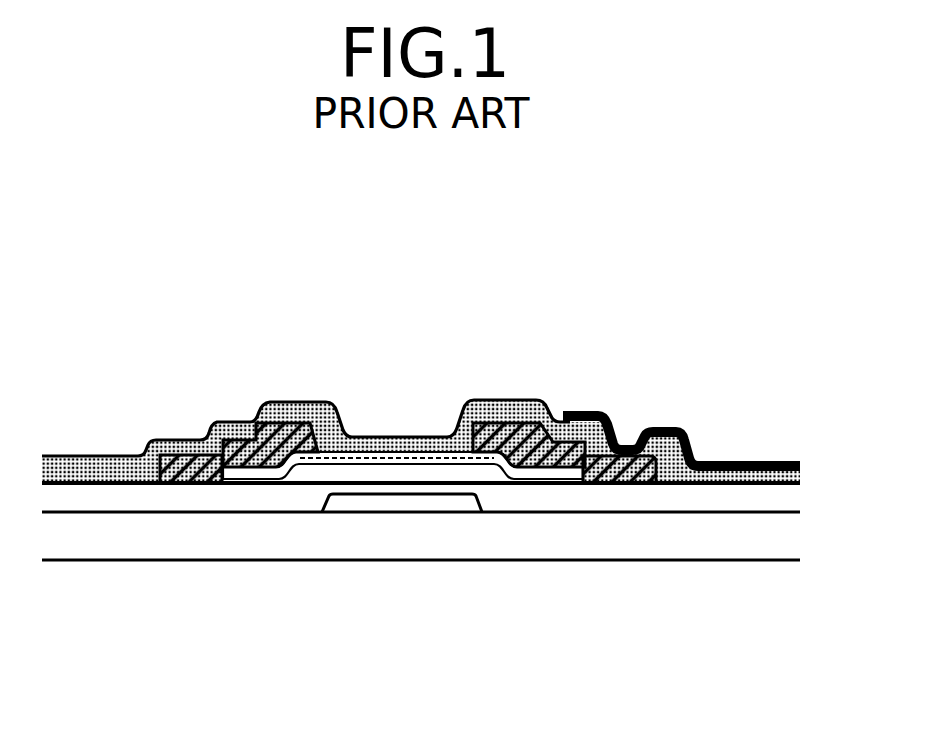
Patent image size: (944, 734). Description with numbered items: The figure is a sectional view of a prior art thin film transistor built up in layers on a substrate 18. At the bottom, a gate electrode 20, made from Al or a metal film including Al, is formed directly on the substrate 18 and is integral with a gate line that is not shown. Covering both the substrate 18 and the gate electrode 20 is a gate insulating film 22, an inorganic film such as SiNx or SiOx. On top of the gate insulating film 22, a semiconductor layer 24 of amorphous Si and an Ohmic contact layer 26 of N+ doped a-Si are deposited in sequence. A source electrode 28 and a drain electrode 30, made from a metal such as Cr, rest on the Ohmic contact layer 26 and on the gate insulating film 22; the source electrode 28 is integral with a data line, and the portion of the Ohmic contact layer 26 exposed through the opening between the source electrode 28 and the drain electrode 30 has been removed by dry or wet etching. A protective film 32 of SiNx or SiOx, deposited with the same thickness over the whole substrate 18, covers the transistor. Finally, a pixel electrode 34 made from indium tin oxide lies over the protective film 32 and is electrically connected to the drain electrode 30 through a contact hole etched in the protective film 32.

The substrate 18 is at (783, 541).
The gate electrode 20 is at (390, 498).
The gate insulating film 22 is at (212, 498).
The semiconductor layer 24 is at (537, 487).
The Ohmic contact layer 26 is at (312, 443).
The source electrode 28 is at (205, 424).
The drain electrode 30 is at (552, 418).
The protective film 32 is at (252, 417).
The pixel electrode 34 is at (611, 437).